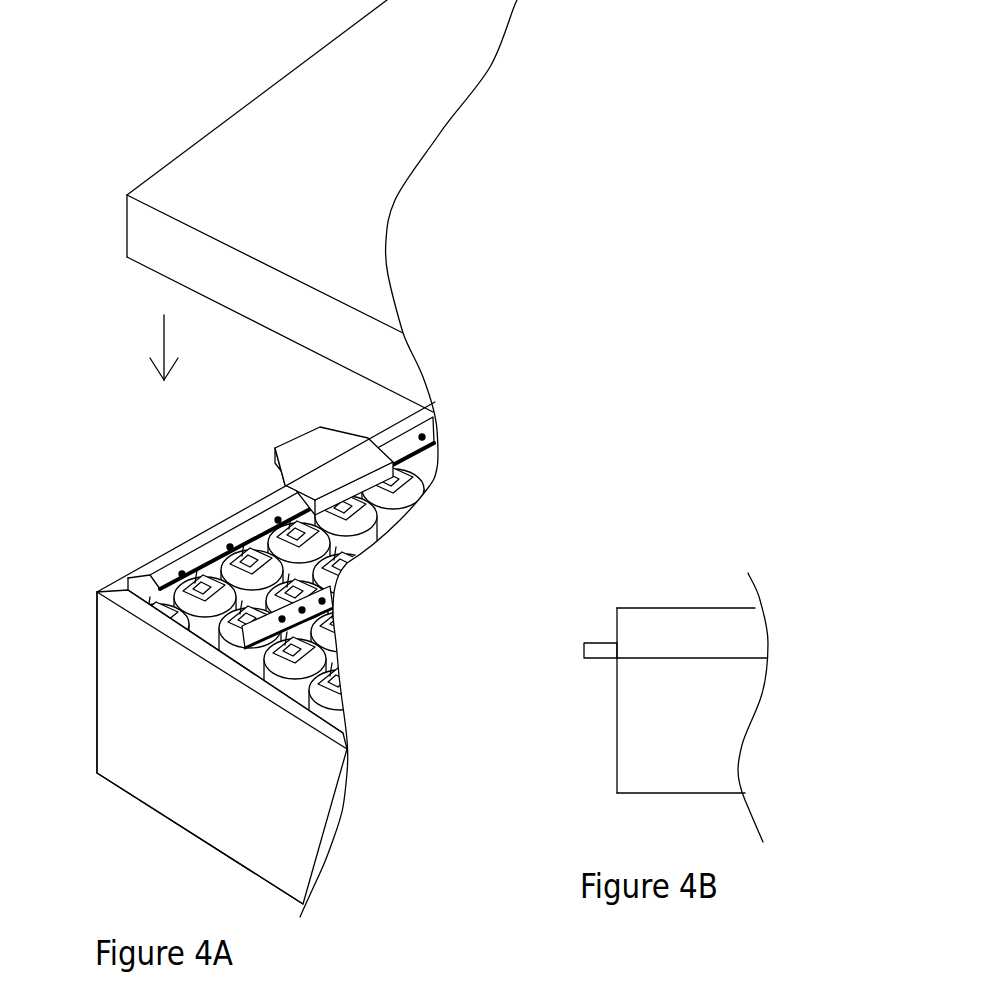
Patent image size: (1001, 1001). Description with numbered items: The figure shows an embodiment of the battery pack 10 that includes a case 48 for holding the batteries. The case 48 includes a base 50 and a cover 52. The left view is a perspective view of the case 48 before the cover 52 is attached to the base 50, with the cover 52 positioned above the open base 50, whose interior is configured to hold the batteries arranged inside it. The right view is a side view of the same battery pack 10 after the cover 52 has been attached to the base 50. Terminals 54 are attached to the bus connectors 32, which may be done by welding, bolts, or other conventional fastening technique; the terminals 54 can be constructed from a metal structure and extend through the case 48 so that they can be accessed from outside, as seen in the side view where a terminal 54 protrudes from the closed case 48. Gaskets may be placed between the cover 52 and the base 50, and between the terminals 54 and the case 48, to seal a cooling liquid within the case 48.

In FIG. 4A, the battery pack 10 is at (432, 483).
In FIG. 4B, the battery pack 10 is at (675, 513).
In FIG. 4A, the bus connectors 32 is at (218, 550).
In FIG. 4B, the case 48 is at (596, 608).
In FIG. 4A, the base 50 is at (96, 679).
In FIG. 4B, the base 50 is at (617, 753).
In FIG. 4A, the cover 52 is at (126, 228).
In FIG. 4B, the cover 52 is at (695, 625).
In FIG. 4A, the terminals 54 is at (277, 443).
In FIG. 4B, the terminals 54 is at (583, 651).